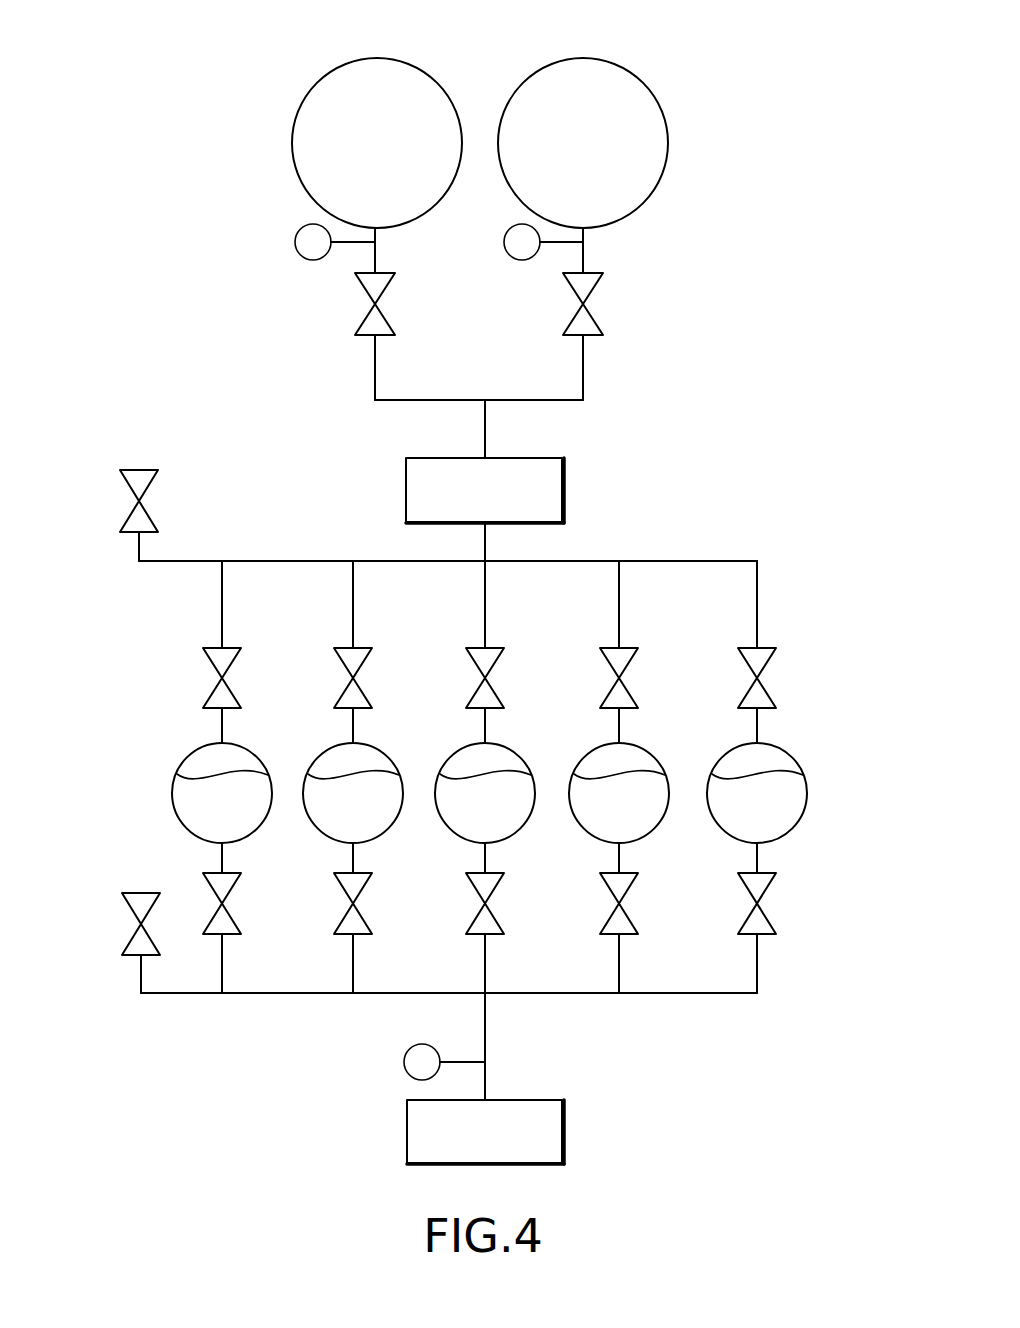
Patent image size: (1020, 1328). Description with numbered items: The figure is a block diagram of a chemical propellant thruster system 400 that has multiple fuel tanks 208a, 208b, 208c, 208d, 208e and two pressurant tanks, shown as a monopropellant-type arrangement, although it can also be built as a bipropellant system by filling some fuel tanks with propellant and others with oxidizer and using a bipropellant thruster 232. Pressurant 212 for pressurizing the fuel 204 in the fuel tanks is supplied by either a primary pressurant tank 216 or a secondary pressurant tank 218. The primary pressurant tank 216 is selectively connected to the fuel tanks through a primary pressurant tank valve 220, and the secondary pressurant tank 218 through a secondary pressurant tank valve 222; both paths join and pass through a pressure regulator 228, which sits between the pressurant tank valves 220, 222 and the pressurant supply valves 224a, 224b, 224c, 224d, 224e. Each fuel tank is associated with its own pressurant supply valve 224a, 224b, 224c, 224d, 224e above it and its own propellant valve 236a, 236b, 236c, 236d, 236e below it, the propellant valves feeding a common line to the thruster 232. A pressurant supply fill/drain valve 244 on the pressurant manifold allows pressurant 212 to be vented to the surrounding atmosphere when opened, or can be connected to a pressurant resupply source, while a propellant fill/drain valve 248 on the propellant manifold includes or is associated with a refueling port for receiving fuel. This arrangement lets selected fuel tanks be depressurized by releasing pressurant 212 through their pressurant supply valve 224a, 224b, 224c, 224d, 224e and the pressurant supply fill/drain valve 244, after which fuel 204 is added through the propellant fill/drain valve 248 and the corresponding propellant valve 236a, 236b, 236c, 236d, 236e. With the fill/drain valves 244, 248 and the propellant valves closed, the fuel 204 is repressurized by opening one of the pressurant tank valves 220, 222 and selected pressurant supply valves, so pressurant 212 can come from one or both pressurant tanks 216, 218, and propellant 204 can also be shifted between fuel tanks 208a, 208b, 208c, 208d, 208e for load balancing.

The chemical propellant thruster system 400 is at (210, 244).
The pressurant 212 is at (380, 71).
The primary pressurant tank 216 is at (403, 220).
The secondary pressurant tank 218 is at (610, 220).
The primary pressurant tank valve 220 is at (367, 292).
The secondary pressurant tank valve 222 is at (574, 292).
The pressure regulator 228 is at (566, 478).
The pressurant supply fill/drain valve 244 is at (137, 493).
The pressurant supply valve 224a is at (211, 658).
The pressurant supply valve 224b is at (342, 658).
The pressurant supply valve 224c is at (474, 658).
The pressurant supply valve 224d is at (608, 658).
The pressurant supply valve 224e is at (746, 658).
The fuel tank 208a is at (203, 744).
The fuel tank 208b is at (334, 744).
The fuel tank 208c is at (466, 744).
The fuel tank 208d is at (600, 744).
The fuel tank 208e is at (738, 744).
The fuel 204 is at (196, 829).
The propellant valve 236a is at (210, 926).
The propellant valve 236b is at (350, 915).
The propellant valve 236c is at (482, 915).
The propellant valve 236d is at (606, 926).
The propellant valve 236e is at (744, 926).
The propellant fill/drain valve 248 is at (138, 915).
The thruster 232 is at (566, 1124).